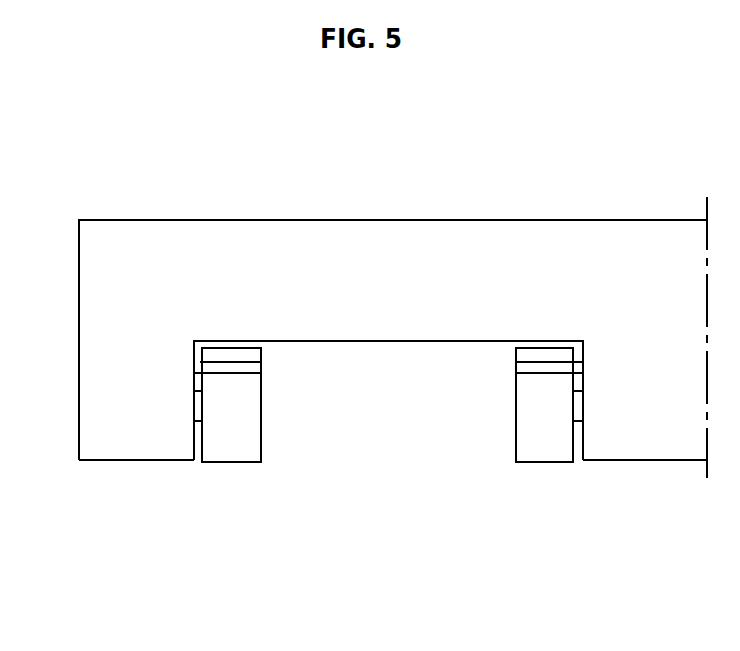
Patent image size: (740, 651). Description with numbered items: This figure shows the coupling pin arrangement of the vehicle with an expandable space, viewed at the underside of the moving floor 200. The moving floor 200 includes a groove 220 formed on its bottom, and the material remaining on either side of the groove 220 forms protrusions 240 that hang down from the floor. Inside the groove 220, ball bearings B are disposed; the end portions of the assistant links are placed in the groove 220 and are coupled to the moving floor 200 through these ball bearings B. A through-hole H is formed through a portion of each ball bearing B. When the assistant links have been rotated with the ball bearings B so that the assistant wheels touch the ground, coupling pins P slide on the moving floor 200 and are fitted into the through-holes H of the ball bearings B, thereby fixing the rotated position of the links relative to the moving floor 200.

The moving floor 200 is at (415, 237).
The groove 220 is at (438, 342).
The protrusions 240 is at (142, 460).
The ball bearings B is at (250, 450).
The through-hole H is at (255, 372).
The coupling pins P is at (205, 367).